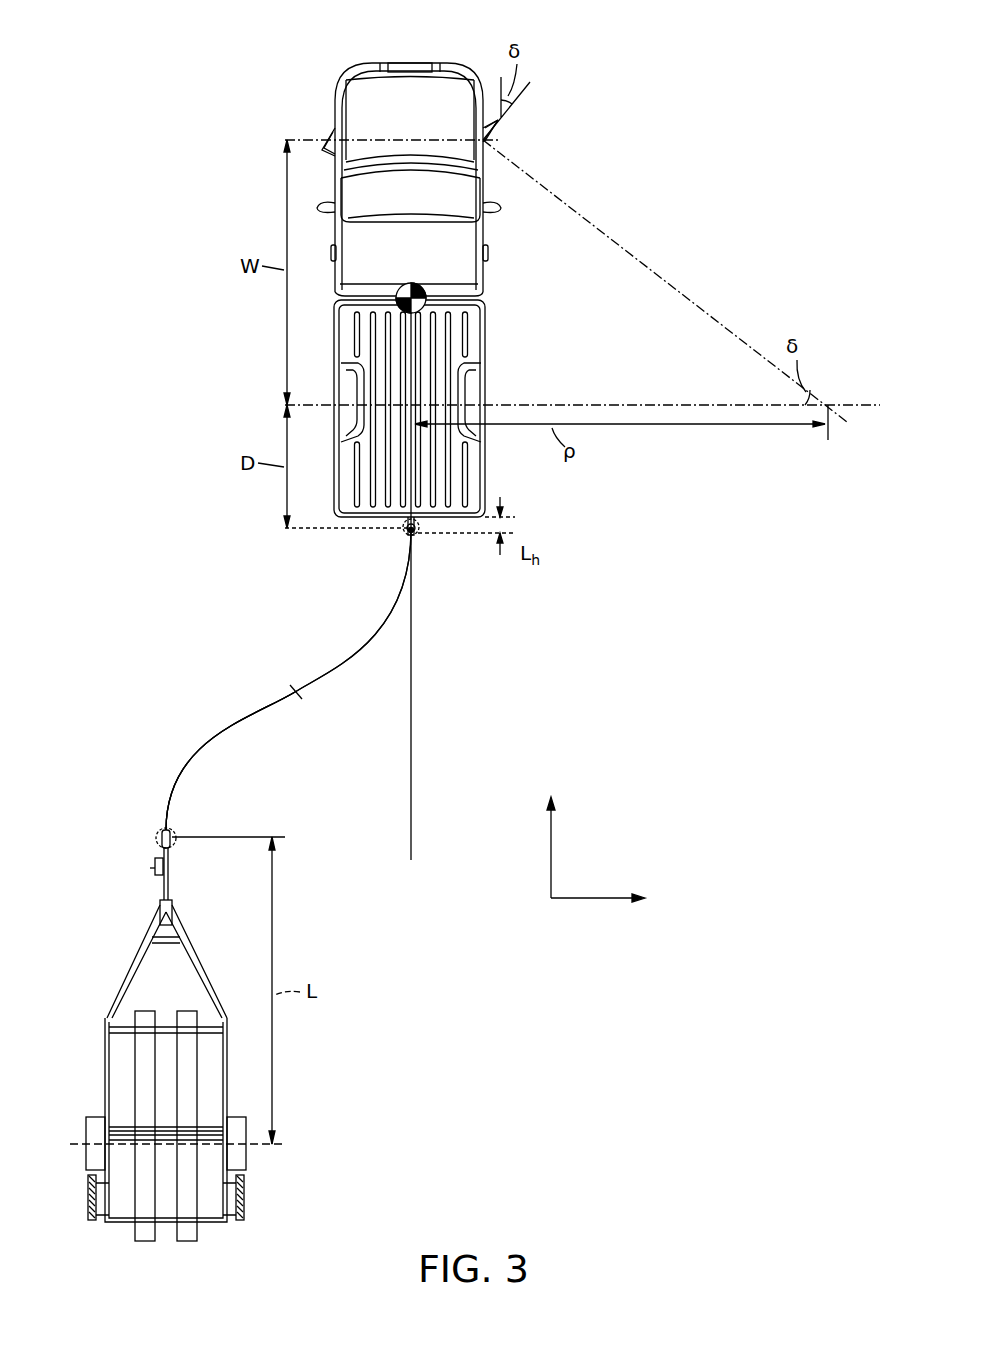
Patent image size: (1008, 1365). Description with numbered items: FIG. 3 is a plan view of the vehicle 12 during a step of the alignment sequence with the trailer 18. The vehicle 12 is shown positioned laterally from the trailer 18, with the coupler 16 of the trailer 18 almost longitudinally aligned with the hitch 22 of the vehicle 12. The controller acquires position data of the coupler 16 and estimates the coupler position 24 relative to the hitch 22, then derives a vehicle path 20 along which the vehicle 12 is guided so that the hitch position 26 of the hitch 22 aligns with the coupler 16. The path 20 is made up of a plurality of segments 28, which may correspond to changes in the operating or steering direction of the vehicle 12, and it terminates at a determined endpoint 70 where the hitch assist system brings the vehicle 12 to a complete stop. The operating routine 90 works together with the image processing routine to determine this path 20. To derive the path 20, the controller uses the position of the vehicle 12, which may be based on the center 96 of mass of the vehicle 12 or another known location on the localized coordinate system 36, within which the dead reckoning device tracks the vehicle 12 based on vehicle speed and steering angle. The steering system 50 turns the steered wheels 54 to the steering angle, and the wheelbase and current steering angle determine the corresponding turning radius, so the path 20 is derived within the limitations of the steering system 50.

The vehicle 12 is at (312, 62).
The steered wheels 54 is at (333, 142).
The center of vehicle 96 is at (400, 306).
The steering system 50 is at (498, 170).
The hitch 22 is at (402, 534).
The hitch position 26 is at (418, 538).
The endpoint 70 is at (406, 540).
The operating routine 90 is at (250, 652).
The segments 28 is at (245, 735).
The vehicle path 20 is at (206, 697).
The localized coordinate system 36 is at (598, 918).
The trailer 18 is at (101, 1061).
The coupler 16 is at (172, 840).
The coupler position 24 is at (176, 830).